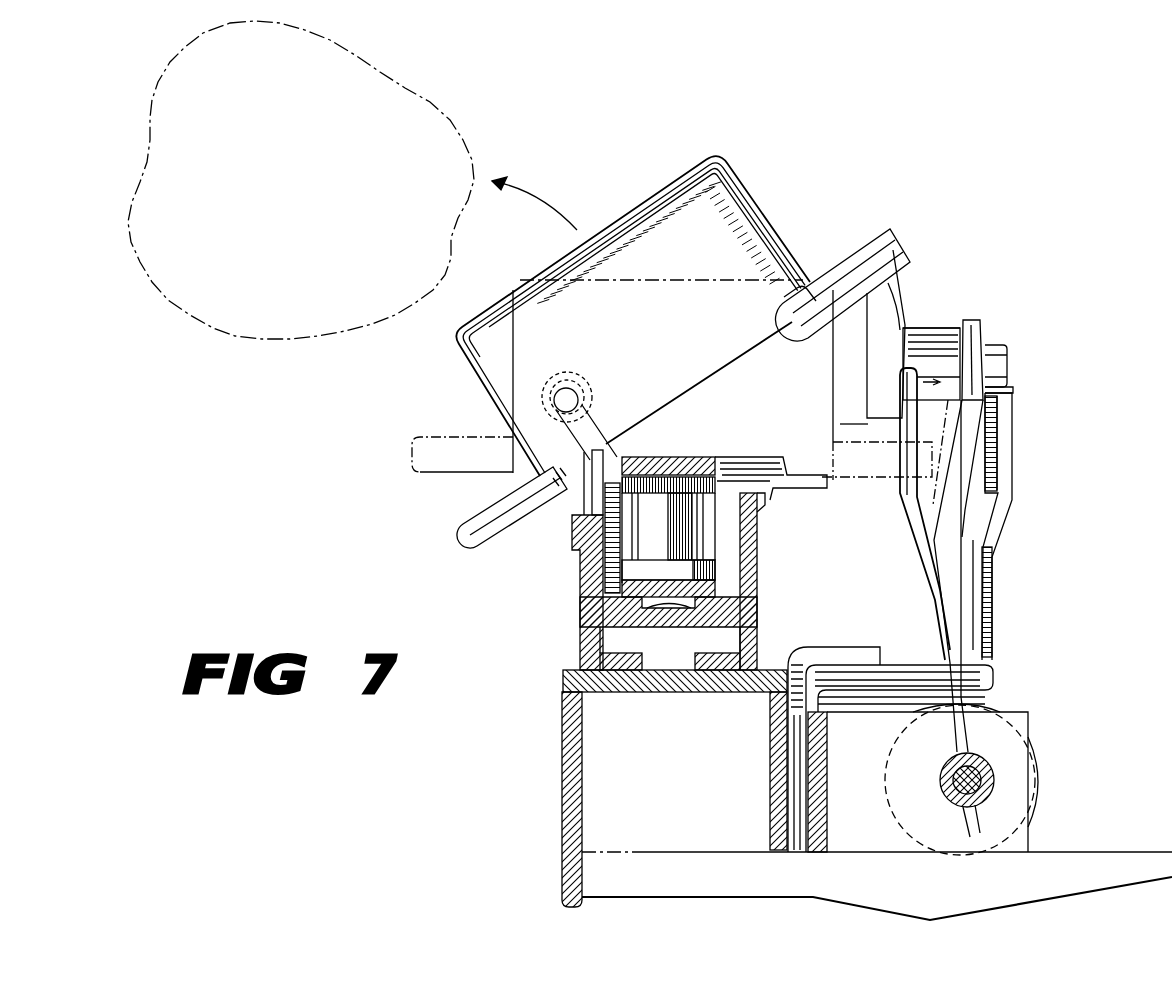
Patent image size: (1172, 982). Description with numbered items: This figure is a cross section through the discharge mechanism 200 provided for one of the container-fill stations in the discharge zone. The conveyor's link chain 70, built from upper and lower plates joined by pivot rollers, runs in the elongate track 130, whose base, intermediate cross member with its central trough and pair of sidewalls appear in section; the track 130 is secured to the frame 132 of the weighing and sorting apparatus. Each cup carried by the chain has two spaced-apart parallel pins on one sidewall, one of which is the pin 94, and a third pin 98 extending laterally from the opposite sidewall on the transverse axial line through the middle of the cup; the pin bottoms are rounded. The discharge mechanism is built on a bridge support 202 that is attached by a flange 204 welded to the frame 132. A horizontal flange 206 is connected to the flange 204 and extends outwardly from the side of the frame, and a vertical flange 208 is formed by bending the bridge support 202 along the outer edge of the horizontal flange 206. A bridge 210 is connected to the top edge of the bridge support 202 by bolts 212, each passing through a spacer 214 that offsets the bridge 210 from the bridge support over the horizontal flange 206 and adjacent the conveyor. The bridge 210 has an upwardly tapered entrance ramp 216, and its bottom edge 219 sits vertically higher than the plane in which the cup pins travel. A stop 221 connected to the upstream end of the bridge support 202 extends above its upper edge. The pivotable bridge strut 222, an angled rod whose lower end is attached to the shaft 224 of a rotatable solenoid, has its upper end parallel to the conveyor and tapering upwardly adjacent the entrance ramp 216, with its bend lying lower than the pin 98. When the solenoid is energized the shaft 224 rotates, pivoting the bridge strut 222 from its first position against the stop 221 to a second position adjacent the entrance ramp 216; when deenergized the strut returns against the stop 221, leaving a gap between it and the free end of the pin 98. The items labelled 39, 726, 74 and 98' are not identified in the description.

The enclosure wall 39 is at (440, 127).
The cover 726 is at (718, 156).
The third pin 98 is at (843, 270).
The hinge rod in alternate position 98' is at (876, 480).
The pin 94 is at (494, 538).
The link chain 70 is at (694, 548).
The mounting plate 74 is at (812, 496).
The elongate track 130 is at (748, 590).
The frame 132 is at (562, 797).
The discharge mechanism 200 is at (1025, 247).
The bridge support 202 is at (987, 338).
The flange 204 is at (793, 770).
The horizontal flange 206 is at (826, 648).
The vertical flange 208 is at (975, 527).
The bridge 210 is at (905, 305).
The bolts 212 is at (1008, 378).
The spacer 214 is at (942, 343).
The entrance ramp 216 is at (902, 273).
The bottom edge 219 is at (878, 434).
The stop 221 is at (1010, 432).
The pivotable bridge strut 222 is at (902, 500).
The shaft 224 is at (950, 780).